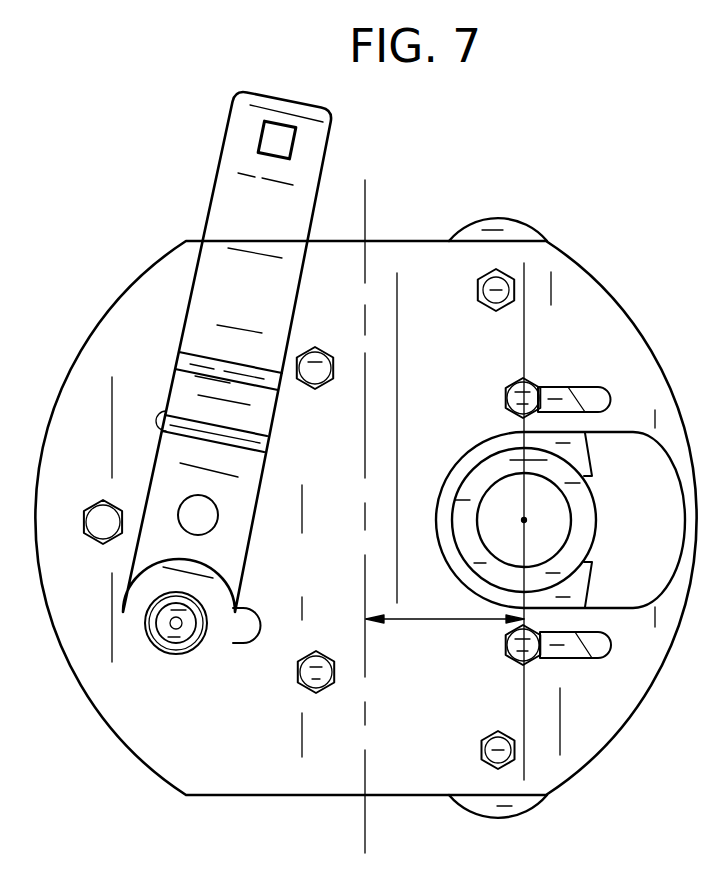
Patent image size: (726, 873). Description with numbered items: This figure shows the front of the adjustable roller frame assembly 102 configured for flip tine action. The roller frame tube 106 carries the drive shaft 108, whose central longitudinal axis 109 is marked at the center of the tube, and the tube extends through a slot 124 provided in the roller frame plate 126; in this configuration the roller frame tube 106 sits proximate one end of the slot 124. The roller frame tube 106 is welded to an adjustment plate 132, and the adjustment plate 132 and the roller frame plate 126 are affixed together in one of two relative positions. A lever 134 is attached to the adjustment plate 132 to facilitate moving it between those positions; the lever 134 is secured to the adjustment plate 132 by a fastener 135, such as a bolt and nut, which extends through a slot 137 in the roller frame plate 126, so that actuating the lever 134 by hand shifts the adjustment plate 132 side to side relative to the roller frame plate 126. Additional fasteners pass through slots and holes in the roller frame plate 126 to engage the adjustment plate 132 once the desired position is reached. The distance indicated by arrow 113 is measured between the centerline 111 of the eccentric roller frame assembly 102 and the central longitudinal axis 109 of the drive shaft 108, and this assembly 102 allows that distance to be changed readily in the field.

The adjustable roller frame assembly 102 is at (432, 213).
The roller frame tube 106 is at (588, 507).
The drive shaft 108 is at (552, 528).
The central longitudinal axis 109 is at (515, 517).
The centerline 111 is at (365, 205).
The distance arrow 113 is at (427, 619).
The slot 124 is at (602, 606).
The roller frame plate 126 is at (355, 760).
The adjustment plate 132 is at (577, 442).
The lever 134 is at (300, 185).
The fastener 135 is at (182, 637).
The slot 137 is at (258, 618).